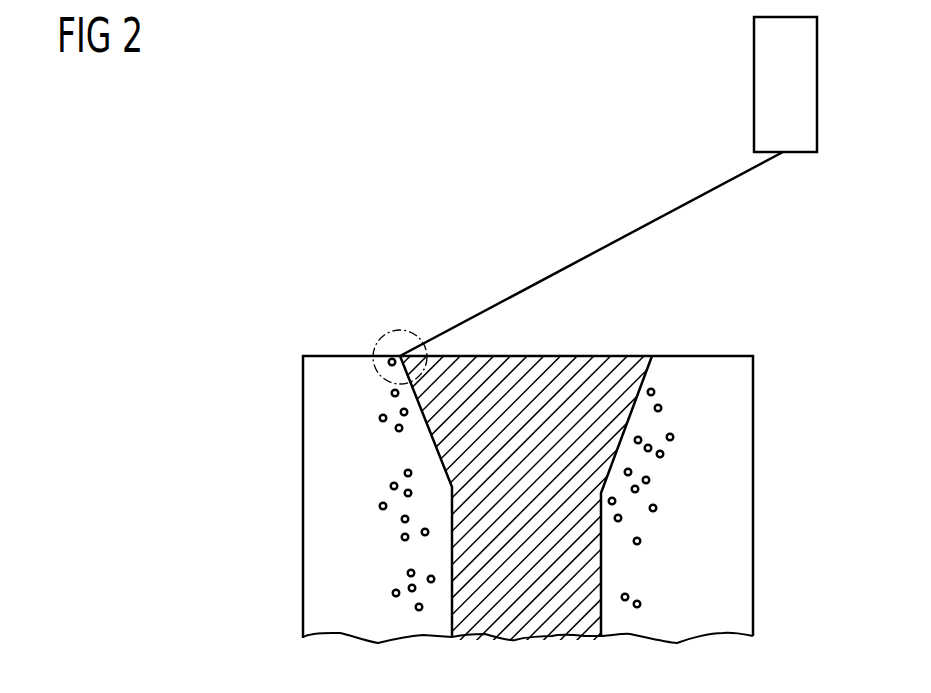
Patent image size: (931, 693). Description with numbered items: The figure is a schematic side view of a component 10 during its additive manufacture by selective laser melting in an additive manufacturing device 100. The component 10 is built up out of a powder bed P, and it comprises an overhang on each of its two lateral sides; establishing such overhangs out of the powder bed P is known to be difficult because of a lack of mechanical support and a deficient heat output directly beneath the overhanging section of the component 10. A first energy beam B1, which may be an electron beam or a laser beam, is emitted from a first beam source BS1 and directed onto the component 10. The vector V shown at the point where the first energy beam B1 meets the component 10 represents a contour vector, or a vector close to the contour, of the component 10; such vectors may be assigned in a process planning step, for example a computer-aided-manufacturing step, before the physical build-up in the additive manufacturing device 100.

The additive manufacturing device 100 is at (500, 194).
The first beam source BS1 is at (754, 84).
The first energy beam B1 is at (623, 237).
The vector V is at (400, 330).
The powder bed P is at (373, 496).
The component 10 is at (590, 568).